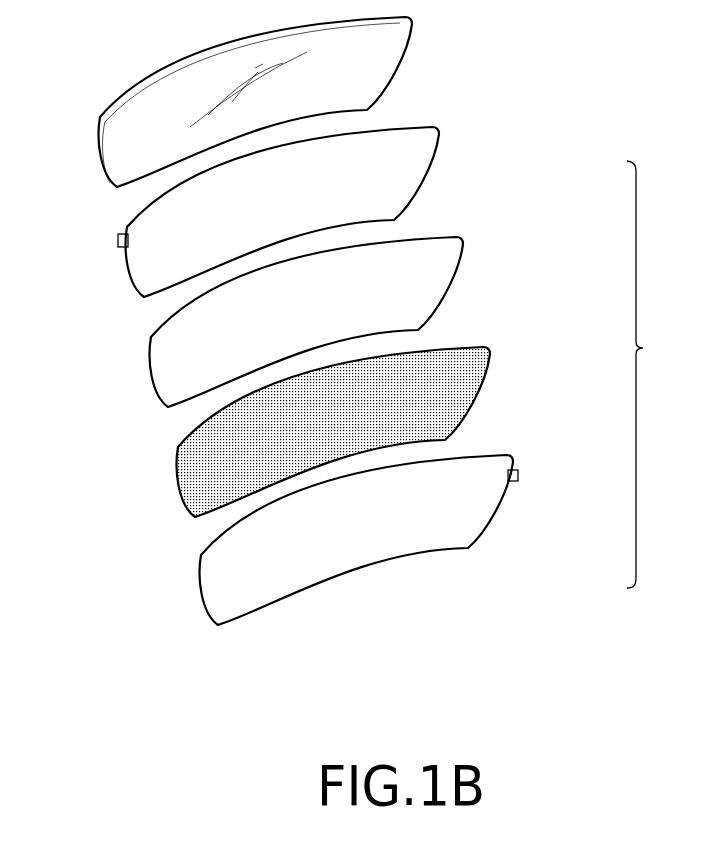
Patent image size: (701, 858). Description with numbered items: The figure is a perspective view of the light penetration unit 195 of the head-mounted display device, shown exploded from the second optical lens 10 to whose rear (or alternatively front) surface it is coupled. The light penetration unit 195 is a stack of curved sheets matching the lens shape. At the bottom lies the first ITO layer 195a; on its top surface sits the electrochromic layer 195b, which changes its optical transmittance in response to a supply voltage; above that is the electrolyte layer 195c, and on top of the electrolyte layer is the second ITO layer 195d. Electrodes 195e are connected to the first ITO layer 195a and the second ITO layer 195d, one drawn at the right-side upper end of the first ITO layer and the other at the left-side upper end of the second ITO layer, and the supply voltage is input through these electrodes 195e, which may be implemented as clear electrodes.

The second optical lens 10 is at (390, 53).
The light penetration unit 195 is at (655, 374).
The first ITO layer 195a is at (465, 528).
The electrochromic layer 195b is at (465, 390).
The electrolyte layer 195c is at (430, 287).
The second ITO layer 195d is at (407, 172).
The electrode 195e is at (118, 240).